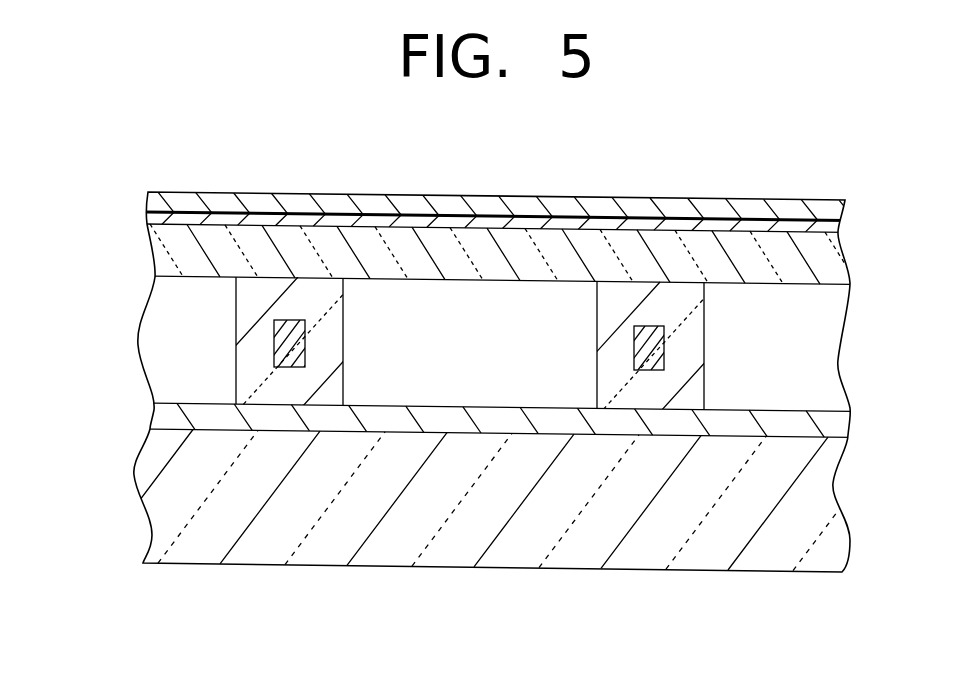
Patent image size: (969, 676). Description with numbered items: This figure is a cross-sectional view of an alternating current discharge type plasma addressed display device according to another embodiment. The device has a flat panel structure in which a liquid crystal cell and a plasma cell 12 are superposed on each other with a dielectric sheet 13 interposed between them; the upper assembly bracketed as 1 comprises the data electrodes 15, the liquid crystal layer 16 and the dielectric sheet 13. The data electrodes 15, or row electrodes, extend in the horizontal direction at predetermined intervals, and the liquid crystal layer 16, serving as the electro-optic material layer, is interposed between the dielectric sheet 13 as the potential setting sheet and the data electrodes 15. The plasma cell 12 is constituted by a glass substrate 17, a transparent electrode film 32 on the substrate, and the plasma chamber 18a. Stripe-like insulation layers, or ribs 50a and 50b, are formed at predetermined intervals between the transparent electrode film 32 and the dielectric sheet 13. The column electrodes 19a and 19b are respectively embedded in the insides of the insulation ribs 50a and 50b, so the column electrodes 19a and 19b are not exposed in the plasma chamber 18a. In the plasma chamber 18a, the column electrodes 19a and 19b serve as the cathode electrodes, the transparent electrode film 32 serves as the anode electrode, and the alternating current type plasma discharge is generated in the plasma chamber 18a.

The first substrate assembly 1 is at (72, 160).
The plasma cell 12 is at (87, 282).
The dielectric sheet 13 is at (152, 258).
The data electrodes 15 is at (147, 204).
The liquid crystal layer 16 is at (148, 220).
The glass substrate 17 is at (637, 550).
The plasma chamber 18a is at (488, 380).
The column electrode 19a is at (305, 343).
The column electrode 19b is at (665, 348).
The transparent electrode film 32 is at (833, 425).
The insulation rib 50a is at (318, 302).
The insulation rib 50b is at (677, 307).